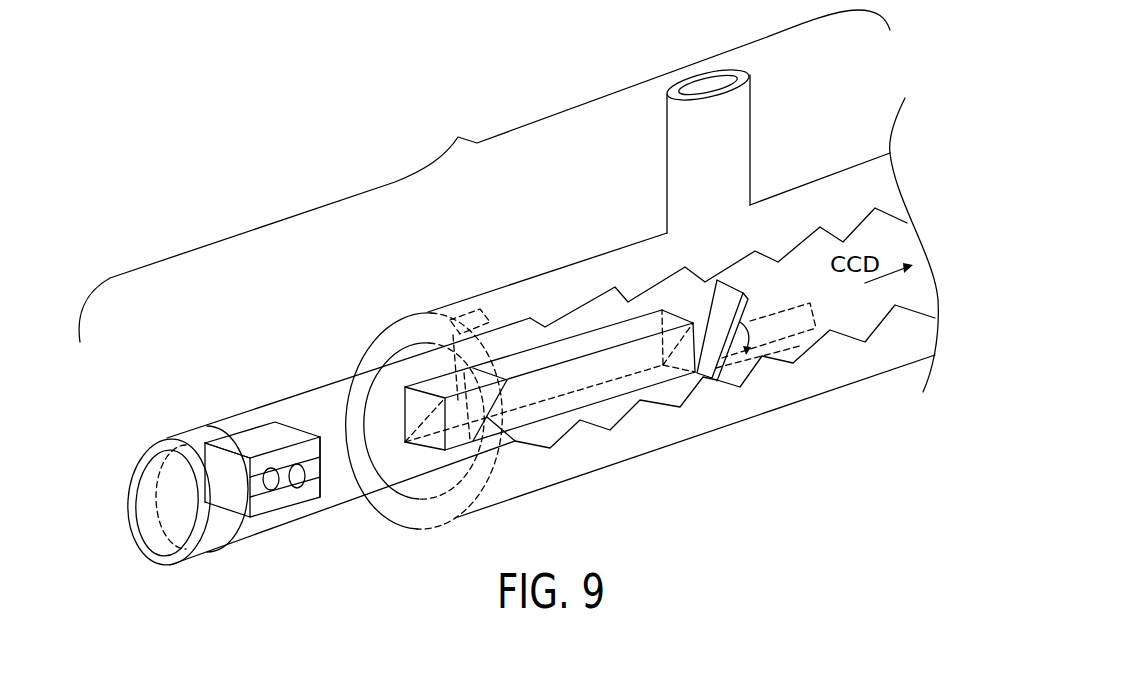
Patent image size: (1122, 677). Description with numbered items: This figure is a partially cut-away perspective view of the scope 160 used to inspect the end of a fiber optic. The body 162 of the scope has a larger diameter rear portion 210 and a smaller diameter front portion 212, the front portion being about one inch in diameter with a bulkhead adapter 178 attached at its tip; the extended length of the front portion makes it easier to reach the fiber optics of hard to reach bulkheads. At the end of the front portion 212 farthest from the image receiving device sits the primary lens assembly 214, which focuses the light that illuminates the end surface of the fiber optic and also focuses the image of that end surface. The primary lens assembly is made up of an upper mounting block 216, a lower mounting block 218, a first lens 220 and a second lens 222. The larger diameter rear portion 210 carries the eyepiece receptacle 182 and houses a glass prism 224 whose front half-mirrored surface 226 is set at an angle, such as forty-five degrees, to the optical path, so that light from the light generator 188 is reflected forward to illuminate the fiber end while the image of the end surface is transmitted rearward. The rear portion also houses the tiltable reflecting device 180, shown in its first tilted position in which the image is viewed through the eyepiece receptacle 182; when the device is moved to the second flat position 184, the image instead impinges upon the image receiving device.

The scope 160 is at (517, 226).
The body 162 is at (508, 201).
The bulkhead adapter 178 is at (216, 543).
The tiltable reflecting device 180 is at (751, 300).
The eyepiece receptacle 182 is at (750, 128).
The second flat position 184 is at (815, 320).
The light generator 188 is at (490, 293).
The larger diameter rear portion 210 is at (455, 305).
The smaller diameter front portion 212 is at (274, 444).
The primary lens assembly 214 is at (300, 505).
The upper mounting block 216 is at (285, 428).
The lower mounting block 218 is at (319, 497).
The first lens 220 is at (266, 470).
The second lens 222 is at (300, 465).
The prism 224 is at (550, 405).
The front half-mirrored surface 226 is at (513, 440).